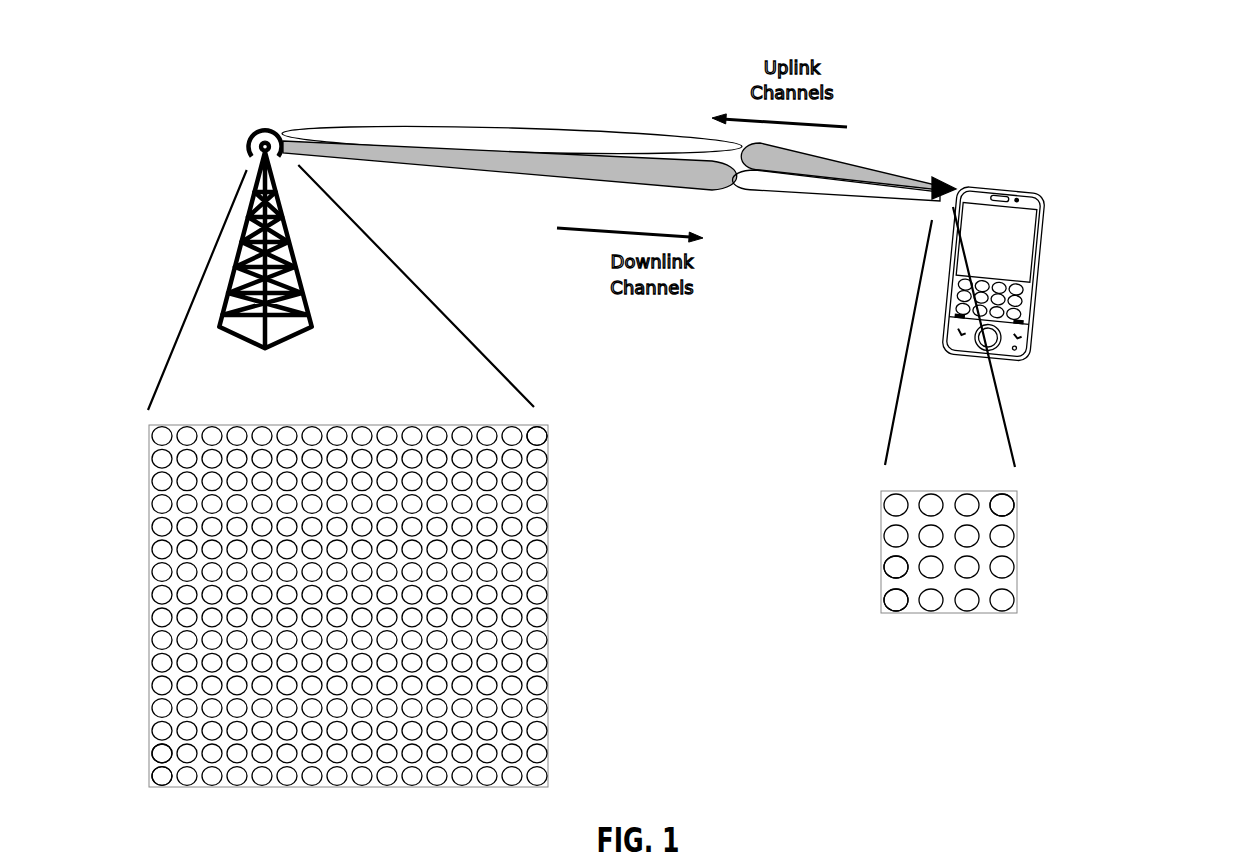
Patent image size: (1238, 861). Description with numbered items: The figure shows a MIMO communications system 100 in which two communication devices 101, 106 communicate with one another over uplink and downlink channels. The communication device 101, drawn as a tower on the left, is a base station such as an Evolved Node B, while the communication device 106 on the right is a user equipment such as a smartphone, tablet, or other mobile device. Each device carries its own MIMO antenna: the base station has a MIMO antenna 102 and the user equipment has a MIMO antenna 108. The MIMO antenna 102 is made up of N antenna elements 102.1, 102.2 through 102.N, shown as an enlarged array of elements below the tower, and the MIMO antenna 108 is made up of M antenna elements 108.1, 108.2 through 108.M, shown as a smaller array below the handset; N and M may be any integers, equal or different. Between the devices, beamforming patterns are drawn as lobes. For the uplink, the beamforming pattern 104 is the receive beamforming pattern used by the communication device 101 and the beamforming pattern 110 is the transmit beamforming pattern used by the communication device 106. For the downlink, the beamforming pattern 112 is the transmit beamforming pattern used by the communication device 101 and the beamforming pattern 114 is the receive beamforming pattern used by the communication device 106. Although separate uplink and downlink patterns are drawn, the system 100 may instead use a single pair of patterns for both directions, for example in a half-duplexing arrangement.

The MIMO communications system 100 is at (1140, 82).
The communication device 101 is at (308, 323).
The MIMO antenna 102 is at (270, 130).
The antenna element 102.1 is at (150, 769).
The antenna element 102.2 is at (150, 742).
The antenna element 102.N is at (546, 437).
The beamforming pattern 104 is at (487, 128).
The communication device 106 is at (1045, 222).
The MIMO antenna 108 is at (948, 178).
The antenna element 108.1 is at (882, 598).
The antenna element 108.2 is at (882, 564).
The antenna element 108.M is at (1017, 503).
The beamforming pattern 110 is at (887, 167).
The beamforming pattern 112 is at (467, 168).
The beamforming pattern 114 is at (805, 196).